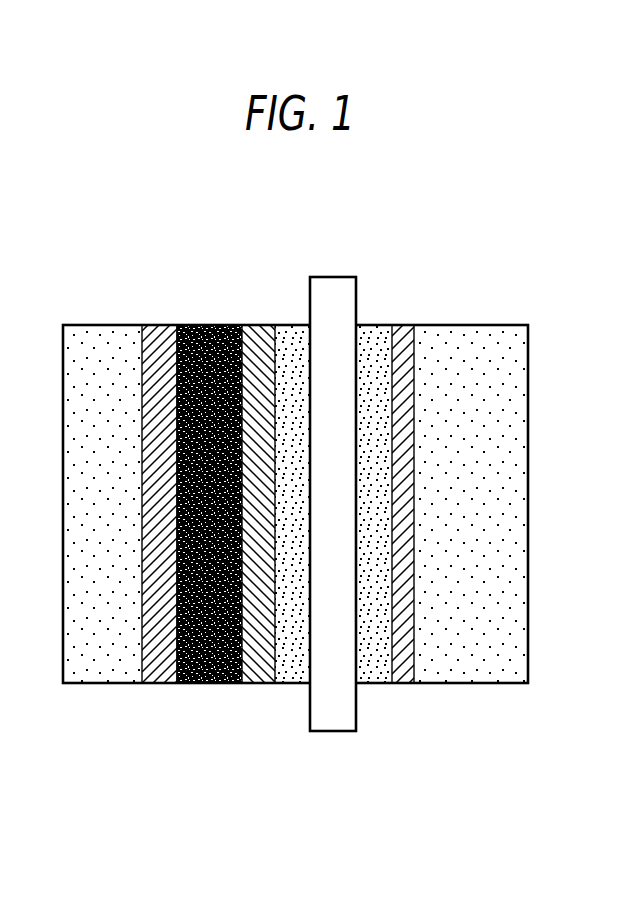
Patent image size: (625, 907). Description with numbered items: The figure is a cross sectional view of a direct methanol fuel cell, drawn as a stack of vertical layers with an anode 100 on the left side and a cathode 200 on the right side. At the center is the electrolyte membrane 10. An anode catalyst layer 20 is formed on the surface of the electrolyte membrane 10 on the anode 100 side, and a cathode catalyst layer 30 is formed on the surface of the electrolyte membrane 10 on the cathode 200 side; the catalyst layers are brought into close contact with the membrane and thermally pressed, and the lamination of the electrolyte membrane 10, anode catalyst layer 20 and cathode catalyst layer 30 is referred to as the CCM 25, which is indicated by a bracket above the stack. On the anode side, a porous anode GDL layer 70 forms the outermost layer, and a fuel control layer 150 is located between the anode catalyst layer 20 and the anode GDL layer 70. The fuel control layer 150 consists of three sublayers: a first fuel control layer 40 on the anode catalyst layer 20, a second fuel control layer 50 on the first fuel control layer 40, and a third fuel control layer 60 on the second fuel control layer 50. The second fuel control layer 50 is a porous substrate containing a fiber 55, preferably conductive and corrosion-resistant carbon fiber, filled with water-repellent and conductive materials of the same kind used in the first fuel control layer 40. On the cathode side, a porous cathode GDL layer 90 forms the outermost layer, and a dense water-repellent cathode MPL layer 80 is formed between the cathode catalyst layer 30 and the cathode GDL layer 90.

The electrolyte membrane 10 is at (335, 731).
The anode catalyst layer 20 is at (292, 540).
The CCM (Catalyst Coated Membrane) 25 is at (335, 511).
The cathode catalyst layer 30 is at (375, 683).
The first fuel control layer 40 is at (258, 540).
The second fuel control layer 50 is at (210, 683).
The fiber 55 is at (196, 325).
The third fuel control layer 60 is at (157, 683).
The anode GDL layer 70 is at (103, 683).
The cathode MPL layer 80 is at (407, 683).
The cathode GDL layer 90 is at (471, 540).
The anode 100 is at (186, 587).
The fuel control layer 150 is at (208, 563).
The cathode 200 is at (442, 563).